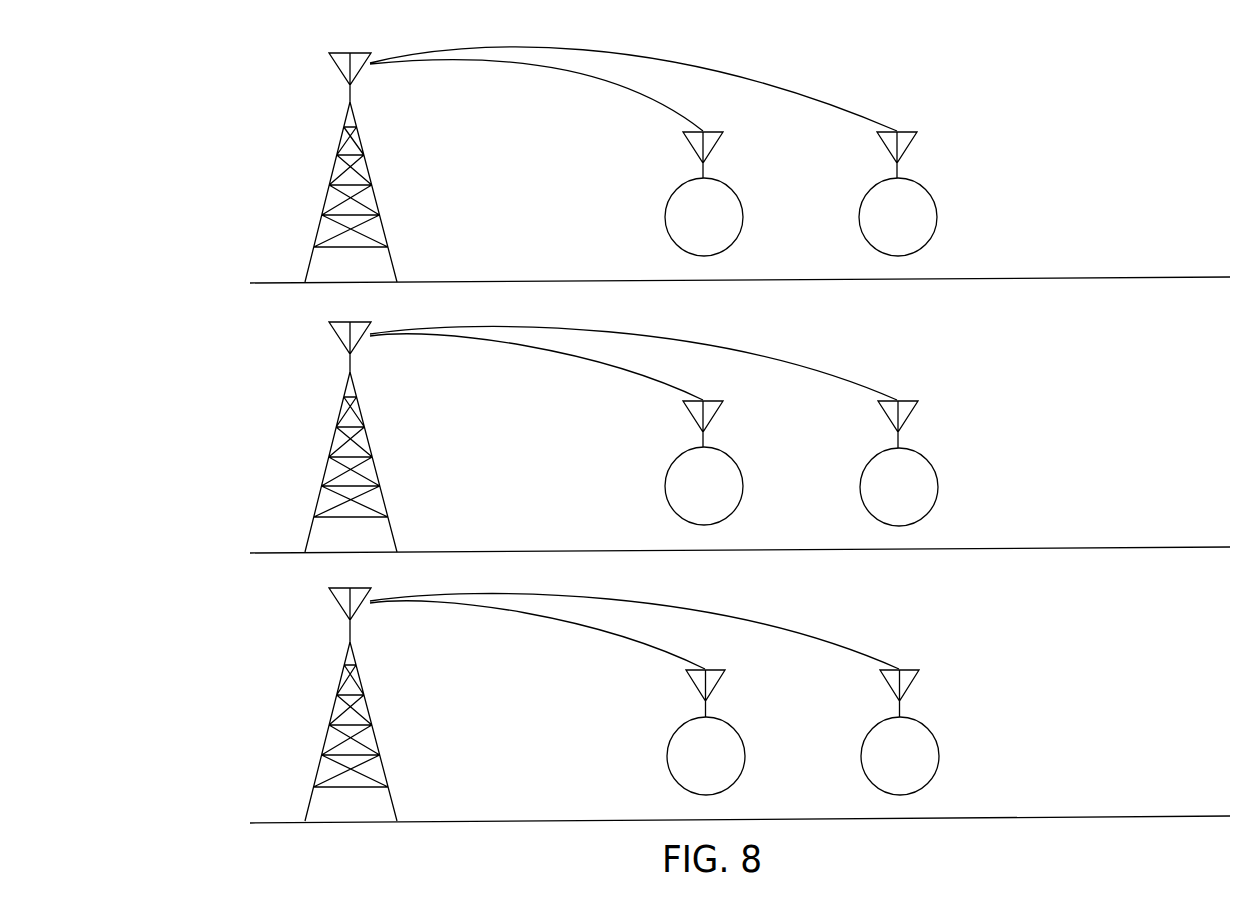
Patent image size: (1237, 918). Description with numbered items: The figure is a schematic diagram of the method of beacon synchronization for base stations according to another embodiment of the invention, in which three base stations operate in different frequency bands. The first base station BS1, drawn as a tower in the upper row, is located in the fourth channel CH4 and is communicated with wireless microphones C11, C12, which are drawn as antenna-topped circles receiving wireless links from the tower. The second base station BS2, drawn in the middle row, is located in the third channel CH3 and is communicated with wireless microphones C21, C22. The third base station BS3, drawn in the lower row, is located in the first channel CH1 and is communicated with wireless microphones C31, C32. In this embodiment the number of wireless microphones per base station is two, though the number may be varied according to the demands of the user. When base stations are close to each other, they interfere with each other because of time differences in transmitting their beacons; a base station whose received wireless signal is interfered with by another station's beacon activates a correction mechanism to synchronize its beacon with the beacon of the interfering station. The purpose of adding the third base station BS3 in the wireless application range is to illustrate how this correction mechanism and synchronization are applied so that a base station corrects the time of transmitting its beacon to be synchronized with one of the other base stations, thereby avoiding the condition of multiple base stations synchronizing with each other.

The first base station BS1 is at (601, 164).
The second base station BS2 is at (601, 437).
The third base station BS3 is at (602, 704).
The wireless microphone C11 is at (704, 194).
The wireless microphone C12 is at (898, 194).
The wireless microphone C21 is at (704, 463).
The wireless microphone C22 is at (899, 463).
The wireless microphone C31 is at (706, 732).
The wireless microphone C32 is at (900, 732).
The channel 4 CH4 is at (711, 202).
The channel 3 CH3 is at (711, 471).
The channel 1 CH1 is at (713, 741).